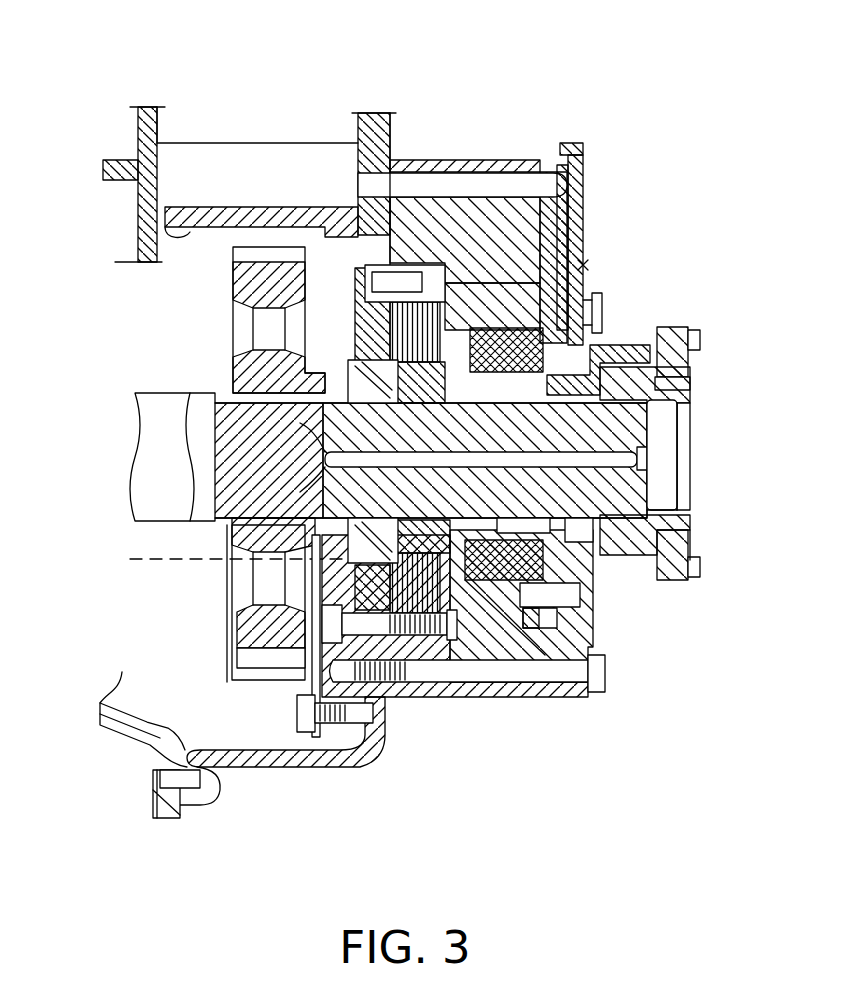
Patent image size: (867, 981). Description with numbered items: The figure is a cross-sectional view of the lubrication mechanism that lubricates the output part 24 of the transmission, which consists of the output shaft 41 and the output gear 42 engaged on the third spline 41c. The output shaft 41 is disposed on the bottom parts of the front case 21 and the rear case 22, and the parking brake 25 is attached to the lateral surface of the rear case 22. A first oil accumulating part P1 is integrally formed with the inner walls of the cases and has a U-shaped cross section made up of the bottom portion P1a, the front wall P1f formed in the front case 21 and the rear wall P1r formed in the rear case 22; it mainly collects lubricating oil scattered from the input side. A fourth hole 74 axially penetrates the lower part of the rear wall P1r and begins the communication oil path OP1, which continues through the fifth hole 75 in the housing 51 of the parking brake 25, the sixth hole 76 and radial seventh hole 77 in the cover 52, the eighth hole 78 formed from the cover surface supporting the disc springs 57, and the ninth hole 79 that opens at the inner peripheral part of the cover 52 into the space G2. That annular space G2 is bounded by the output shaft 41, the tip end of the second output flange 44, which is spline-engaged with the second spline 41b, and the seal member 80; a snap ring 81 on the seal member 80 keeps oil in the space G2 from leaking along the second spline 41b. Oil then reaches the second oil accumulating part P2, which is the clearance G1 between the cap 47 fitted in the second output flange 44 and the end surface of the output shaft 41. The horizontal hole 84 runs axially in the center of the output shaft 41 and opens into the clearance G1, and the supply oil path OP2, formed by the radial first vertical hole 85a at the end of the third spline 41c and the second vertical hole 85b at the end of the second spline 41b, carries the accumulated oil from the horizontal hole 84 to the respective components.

The front case 21 is at (140, 123).
The front wall P1f is at (172, 130).
The first oil accumulating part P1 is at (263, 140).
The rear wall P1r is at (350, 128).
The bottom portion P1a is at (165, 250).
The rear case 22 is at (392, 134).
The fourth hole 74 is at (388, 162).
The housing 51 is at (488, 160).
The fifth hole 75 is at (518, 192).
The sixth hole 76 is at (562, 152).
The seventh hole 77 is at (585, 220).
The cover 52 is at (585, 165).
The communication oil path OP1 is at (585, 265).
The snap ring 81 is at (600, 300).
The parking brake 25 is at (548, 88).
The eighth hole 78 is at (600, 350).
The second output flange 44 is at (700, 348).
The ninth hole 79 is at (690, 372).
The cap 47 is at (683, 450).
The second oil accumulating part P2 is at (655, 463).
The clearance G1 is at (660, 475).
The seal member 80 is at (665, 495).
The space G2 is at (690, 540).
The disc springs 57 is at (585, 572).
The horizontal hole 84 is at (540, 545).
The second spline 41b is at (483, 450).
The output shaft 41 is at (165, 405).
The output gear 42 is at (231, 258).
The first vertical hole 85a is at (300, 423).
The second vertical hole 85b is at (300, 455).
The supply oil path OP2 is at (300, 492).
The third spline 41c is at (225, 545).
The output part 24 is at (85, 365).